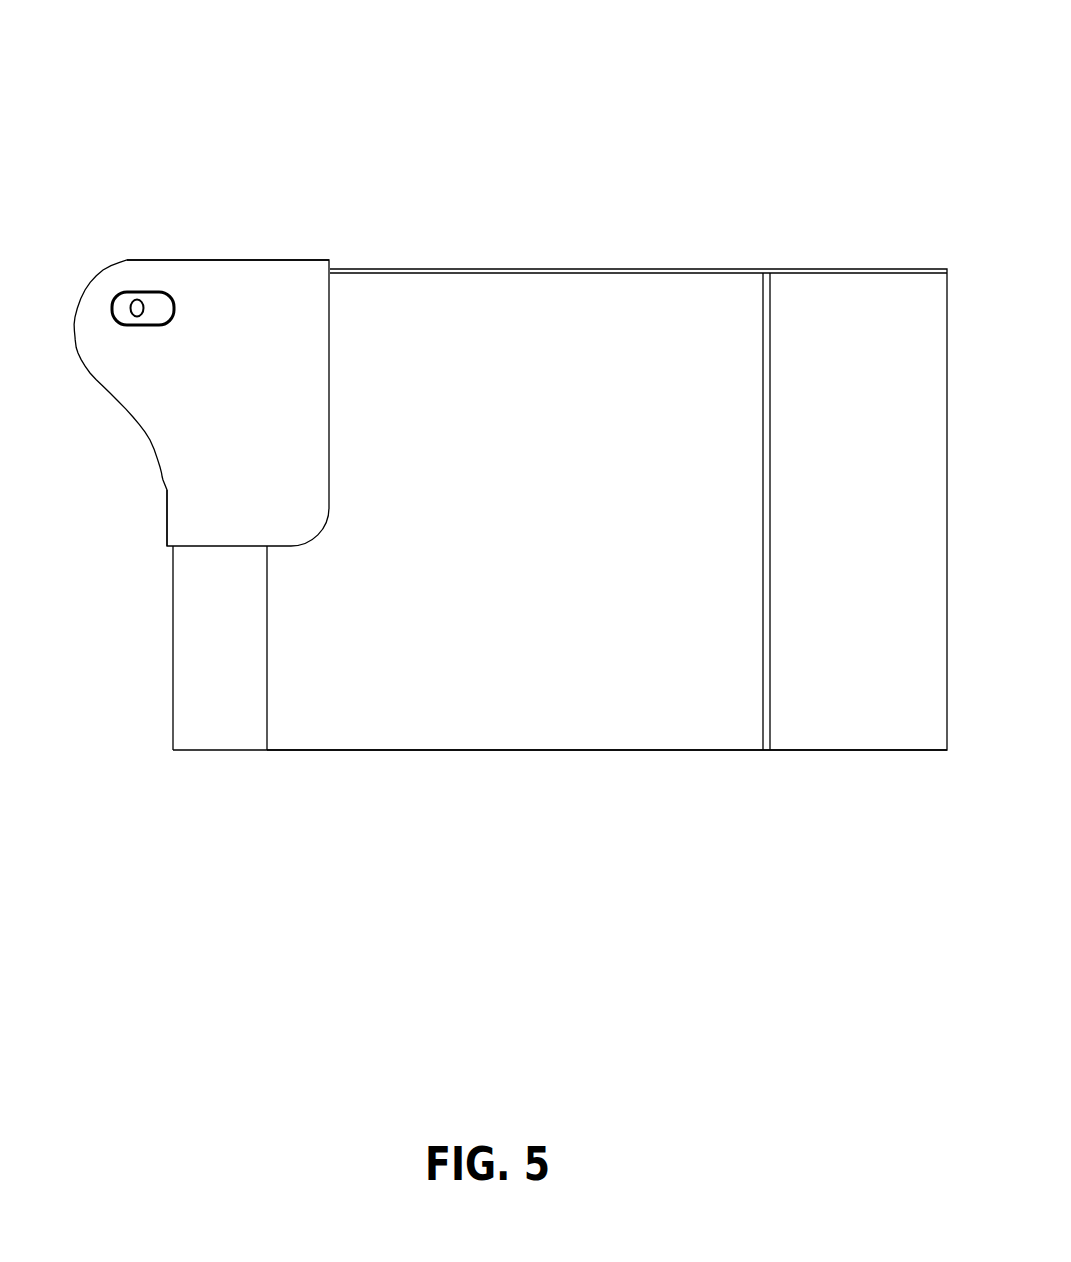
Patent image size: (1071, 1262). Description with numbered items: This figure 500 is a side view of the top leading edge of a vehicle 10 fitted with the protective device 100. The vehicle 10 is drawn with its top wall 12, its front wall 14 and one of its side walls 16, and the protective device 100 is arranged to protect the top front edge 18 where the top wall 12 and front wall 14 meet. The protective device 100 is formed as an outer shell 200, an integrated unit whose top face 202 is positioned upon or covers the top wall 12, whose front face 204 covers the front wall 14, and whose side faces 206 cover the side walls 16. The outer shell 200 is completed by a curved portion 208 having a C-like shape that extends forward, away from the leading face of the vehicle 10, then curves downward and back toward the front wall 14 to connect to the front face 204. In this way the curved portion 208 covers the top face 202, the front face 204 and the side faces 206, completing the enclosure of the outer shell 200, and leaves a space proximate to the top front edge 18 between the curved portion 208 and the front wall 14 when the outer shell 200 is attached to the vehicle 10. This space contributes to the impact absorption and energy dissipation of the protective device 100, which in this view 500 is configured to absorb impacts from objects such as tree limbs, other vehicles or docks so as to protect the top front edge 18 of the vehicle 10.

The system 500 is at (825, 32).
The protective device 100 is at (233, 228).
The top front edge 18 is at (86, 262).
The vehicle 10 is at (350, 269).
The top wall 12 is at (620, 269).
The front wall 14 is at (173, 610).
The side wall 16 is at (360, 612).
The outer shell 200 is at (123, 260).
The top face 202 is at (240, 260).
The front face 204 is at (172, 508).
The side face 206 is at (205, 368).
The curved portion 208 is at (80, 353).